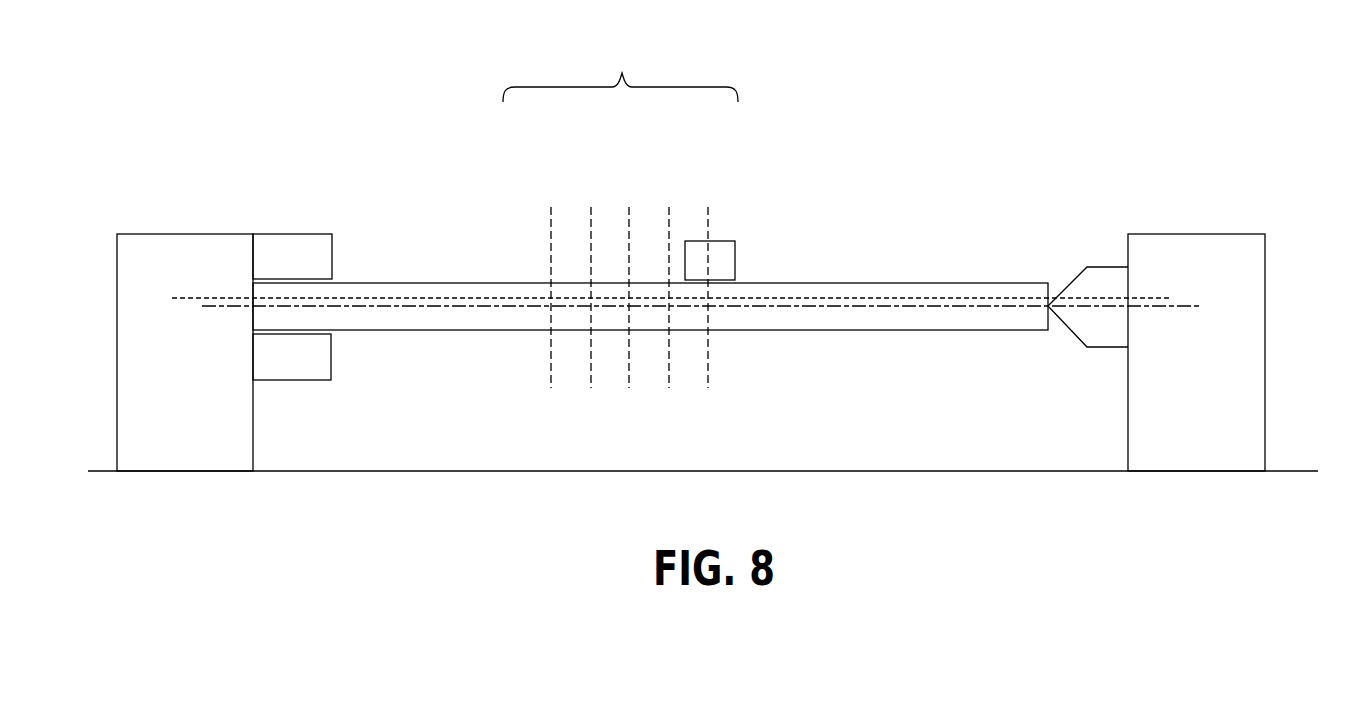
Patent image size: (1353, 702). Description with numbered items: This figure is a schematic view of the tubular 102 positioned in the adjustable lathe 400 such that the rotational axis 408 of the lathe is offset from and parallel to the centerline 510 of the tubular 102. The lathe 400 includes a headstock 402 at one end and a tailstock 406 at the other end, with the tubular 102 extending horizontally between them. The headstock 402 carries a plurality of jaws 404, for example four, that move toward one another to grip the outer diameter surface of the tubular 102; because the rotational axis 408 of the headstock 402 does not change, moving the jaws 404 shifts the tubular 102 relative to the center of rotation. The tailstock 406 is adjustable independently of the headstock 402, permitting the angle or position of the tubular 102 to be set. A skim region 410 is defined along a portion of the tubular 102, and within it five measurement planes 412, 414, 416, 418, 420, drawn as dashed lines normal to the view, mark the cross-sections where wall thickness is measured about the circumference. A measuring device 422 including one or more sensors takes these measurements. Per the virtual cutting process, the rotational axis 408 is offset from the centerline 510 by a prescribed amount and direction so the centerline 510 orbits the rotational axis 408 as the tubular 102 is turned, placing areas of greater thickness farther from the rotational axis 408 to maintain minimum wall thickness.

The lathe 400 is at (250, 70).
The headstock 402 is at (205, 234).
The jaws 404 is at (317, 380).
The tailstock 406 is at (1172, 234).
The rotational axis 408 is at (333, 297).
The skim region 410 is at (620, 76).
The measurement plane 412 is at (551, 228).
The measurement plane 414 is at (591, 368).
The measurement plane 416 is at (629, 215).
The measurement plane 418 is at (669, 368).
The measurement plane 420 is at (708, 215).
The measuring device 422 is at (720, 241).
The tubular 102 is at (912, 283).
The centerline 510 is at (960, 308).